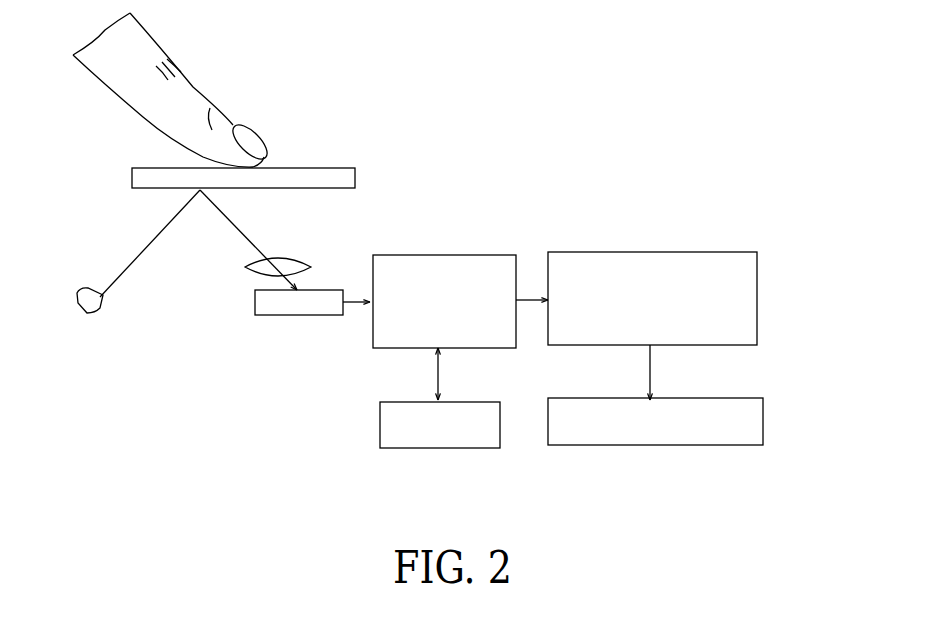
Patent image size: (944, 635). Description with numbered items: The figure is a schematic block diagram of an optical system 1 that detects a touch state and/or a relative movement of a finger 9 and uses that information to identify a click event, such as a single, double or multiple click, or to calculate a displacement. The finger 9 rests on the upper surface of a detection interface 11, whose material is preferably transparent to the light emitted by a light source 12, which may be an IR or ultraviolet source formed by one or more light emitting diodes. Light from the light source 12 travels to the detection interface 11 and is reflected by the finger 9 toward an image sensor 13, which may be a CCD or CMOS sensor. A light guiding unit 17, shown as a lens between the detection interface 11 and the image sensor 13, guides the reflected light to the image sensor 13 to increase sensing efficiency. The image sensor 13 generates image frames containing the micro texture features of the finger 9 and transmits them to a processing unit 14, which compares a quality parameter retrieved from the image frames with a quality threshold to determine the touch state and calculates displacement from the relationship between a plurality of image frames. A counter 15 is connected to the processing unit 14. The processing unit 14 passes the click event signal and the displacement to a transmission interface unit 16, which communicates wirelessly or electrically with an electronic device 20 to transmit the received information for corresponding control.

The optical system 1 is at (732, 112).
The finger 9 is at (153, 52).
The detection interface 11 is at (332, 168).
The light source 12 is at (85, 314).
The image sensor 13 is at (287, 315).
The processing unit 14 is at (422, 253).
The counter 15 is at (500, 437).
The transmission interface unit 16 is at (619, 252).
The light guiding unit 17 is at (298, 260).
The electronic device 20 is at (763, 433).